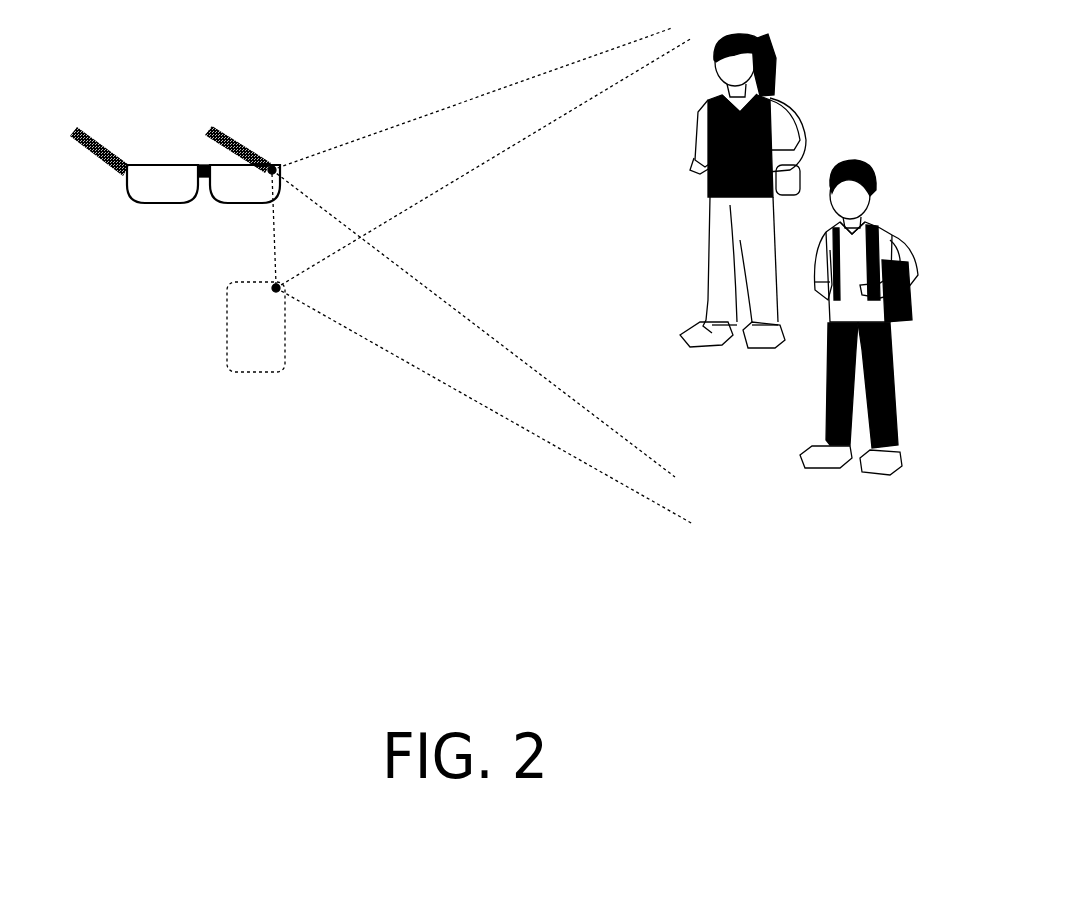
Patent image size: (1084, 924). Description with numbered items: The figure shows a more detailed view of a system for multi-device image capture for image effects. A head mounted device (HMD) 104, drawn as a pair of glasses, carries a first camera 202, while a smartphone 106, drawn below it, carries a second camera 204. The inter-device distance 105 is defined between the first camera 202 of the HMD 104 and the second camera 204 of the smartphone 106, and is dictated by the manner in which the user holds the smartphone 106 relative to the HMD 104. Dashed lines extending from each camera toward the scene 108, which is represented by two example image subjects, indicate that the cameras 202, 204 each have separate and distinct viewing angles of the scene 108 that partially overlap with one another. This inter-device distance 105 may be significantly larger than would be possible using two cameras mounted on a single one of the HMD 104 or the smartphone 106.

The head mounted device (HMD) 104 is at (96, 138).
The inter-device distance 105 is at (273, 226).
The smartphone 106 is at (285, 347).
The scene 108 is at (853, 86).
The first camera 202 is at (273, 165).
The second camera 204 is at (277, 284).